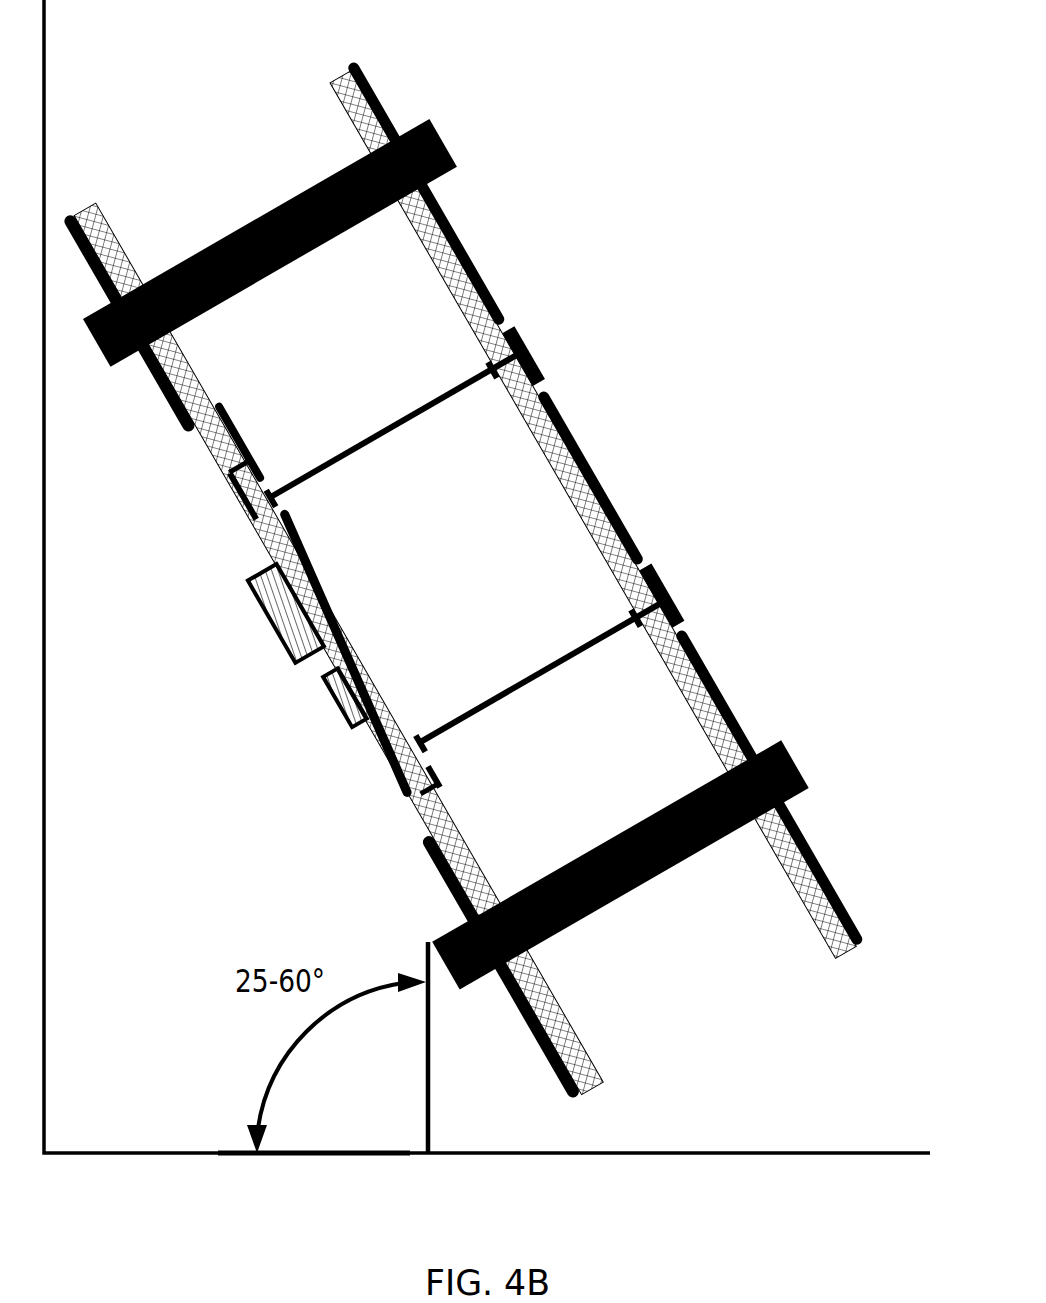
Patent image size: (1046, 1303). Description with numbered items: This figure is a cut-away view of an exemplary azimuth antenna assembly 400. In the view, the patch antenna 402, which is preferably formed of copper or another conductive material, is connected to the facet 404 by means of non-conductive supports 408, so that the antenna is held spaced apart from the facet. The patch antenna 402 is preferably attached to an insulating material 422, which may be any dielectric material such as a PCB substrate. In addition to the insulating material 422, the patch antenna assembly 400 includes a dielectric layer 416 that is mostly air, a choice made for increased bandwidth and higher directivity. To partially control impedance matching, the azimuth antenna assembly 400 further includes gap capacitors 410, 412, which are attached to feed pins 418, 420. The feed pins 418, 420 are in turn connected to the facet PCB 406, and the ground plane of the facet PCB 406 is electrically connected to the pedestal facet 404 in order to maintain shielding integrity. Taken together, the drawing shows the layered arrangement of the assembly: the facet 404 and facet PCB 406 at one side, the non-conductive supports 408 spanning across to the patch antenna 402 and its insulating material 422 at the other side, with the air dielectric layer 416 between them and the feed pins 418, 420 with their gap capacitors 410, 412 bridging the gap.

The azimuth antenna assembly 400 is at (640, 48).
The patch antenna 402 is at (845, 902).
The facet 404 is at (585, 1096).
The facet PCB 406 is at (554, 1002).
The non-conductive supports 408 is at (410, 132).
The gap capacitor 410 is at (515, 350).
The gap capacitor 412 is at (663, 590).
The dielectric layer 416 is at (400, 330).
The feed pin 418 is at (323, 471).
The feed pin 420 is at (533, 665).
The insulating material 422 is at (853, 962).